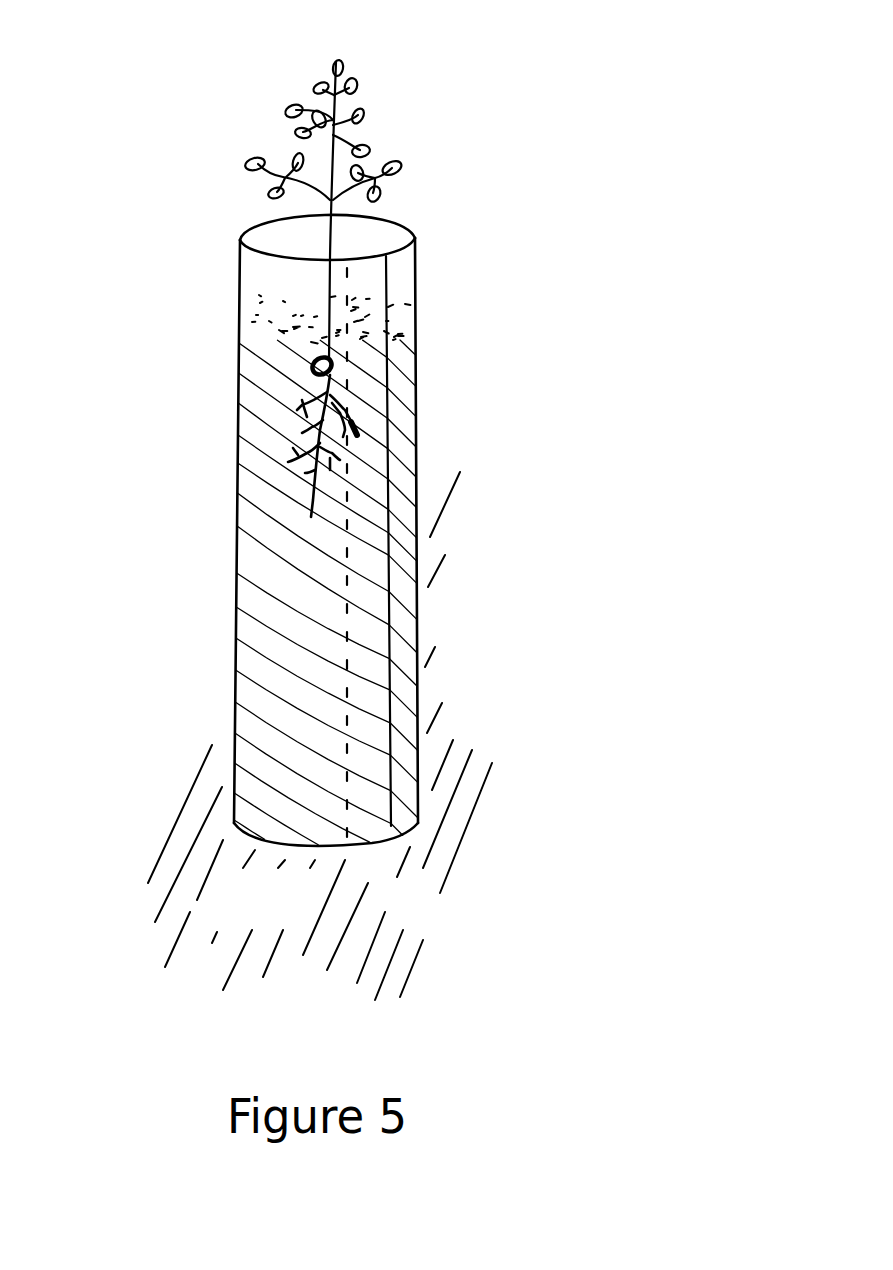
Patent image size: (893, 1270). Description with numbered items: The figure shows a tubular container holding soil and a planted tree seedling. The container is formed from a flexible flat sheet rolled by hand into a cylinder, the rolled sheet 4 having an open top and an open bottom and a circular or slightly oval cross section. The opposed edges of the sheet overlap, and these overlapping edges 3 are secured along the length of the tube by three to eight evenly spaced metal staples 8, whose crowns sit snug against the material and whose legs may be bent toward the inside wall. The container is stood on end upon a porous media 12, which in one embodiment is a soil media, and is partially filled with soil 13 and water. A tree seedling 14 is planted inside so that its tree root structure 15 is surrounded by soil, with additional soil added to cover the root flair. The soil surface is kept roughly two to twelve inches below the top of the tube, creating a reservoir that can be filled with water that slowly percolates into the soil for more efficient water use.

The tree seedling 14 is at (374, 125).
The rolled sheet 4 is at (416, 224).
The tree root structure 15 is at (312, 426).
The soil 13 is at (274, 540).
The metal staple 8 is at (355, 689).
The porous media 12 is at (320, 736).
The overlapping edges 3 is at (373, 845).